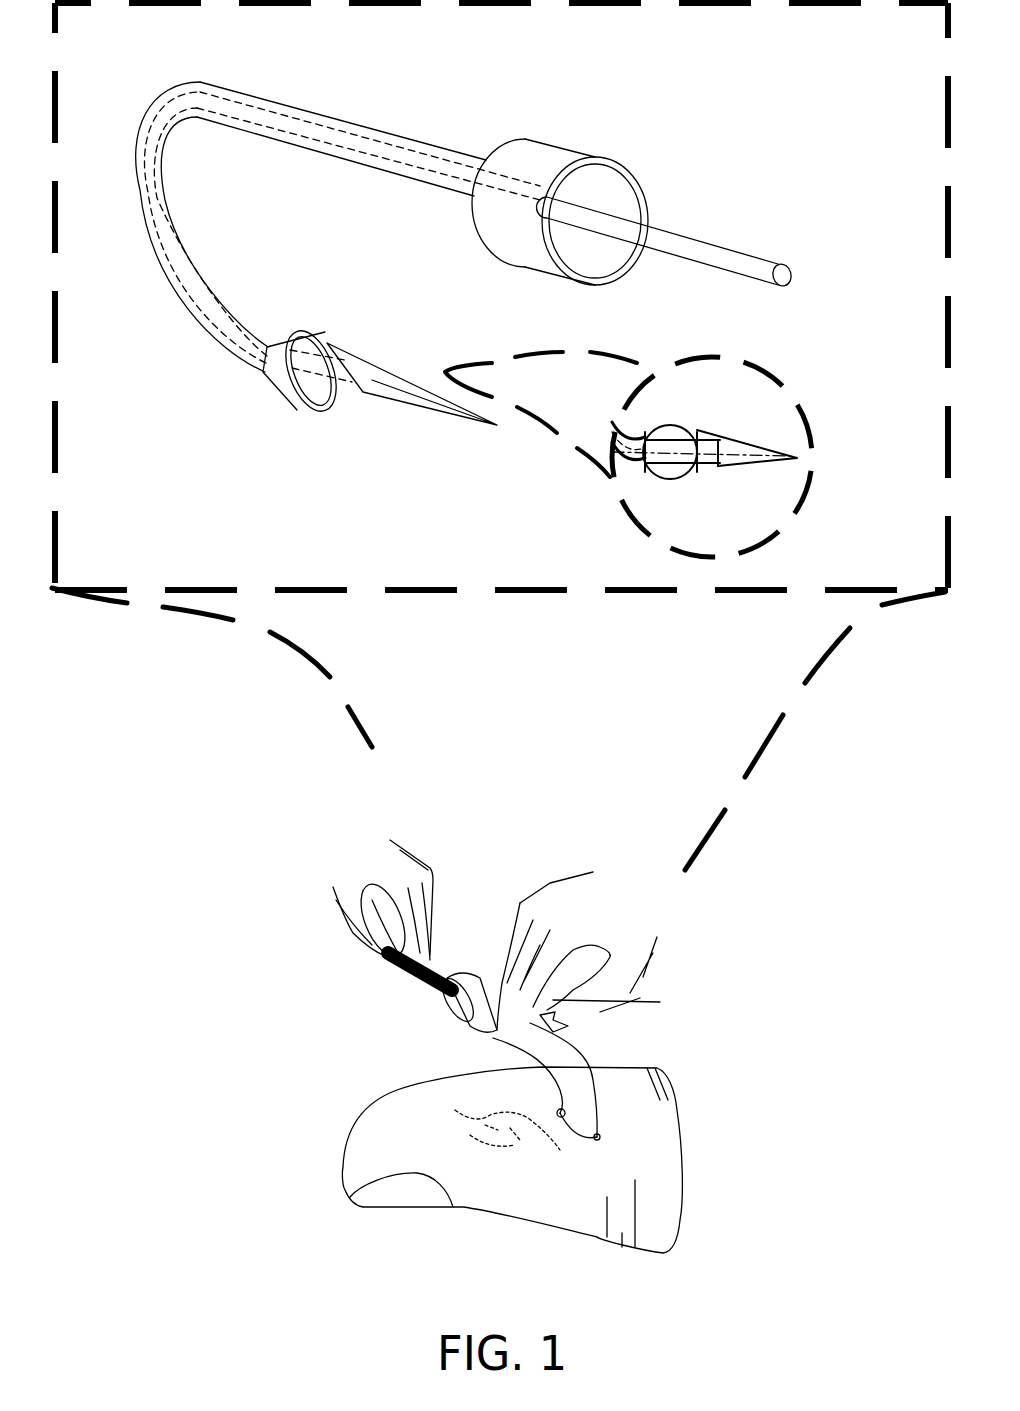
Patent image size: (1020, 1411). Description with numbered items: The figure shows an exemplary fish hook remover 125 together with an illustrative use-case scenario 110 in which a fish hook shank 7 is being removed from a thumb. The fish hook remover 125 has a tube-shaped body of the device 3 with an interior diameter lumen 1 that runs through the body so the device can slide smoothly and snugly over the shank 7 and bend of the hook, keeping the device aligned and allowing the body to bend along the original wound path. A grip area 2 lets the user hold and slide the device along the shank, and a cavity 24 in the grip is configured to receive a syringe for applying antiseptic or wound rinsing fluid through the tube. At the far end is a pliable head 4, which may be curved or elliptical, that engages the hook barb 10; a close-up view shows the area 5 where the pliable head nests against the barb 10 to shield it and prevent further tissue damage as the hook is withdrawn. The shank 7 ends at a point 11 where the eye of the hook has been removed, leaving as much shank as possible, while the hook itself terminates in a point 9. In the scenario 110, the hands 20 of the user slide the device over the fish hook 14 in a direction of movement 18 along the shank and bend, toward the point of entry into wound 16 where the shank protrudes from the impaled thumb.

The interior diameter lumen 1 is at (185, 292).
The grip area 2 is at (535, 150).
The tube-shaped body of the device 3 is at (330, 132).
The head 4 is at (280, 397).
The area where the pliable device head nests against the hook barb 5 is at (356, 365).
The fish hook shank 7 is at (718, 246).
The point of the fish hook 9 is at (425, 407).
The barb 10 is at (477, 1120).
The point where the eye of the fish hook is removed 11 is at (784, 266).
The fish hook 14 is at (570, 1068).
The point of entry into wound 16 is at (603, 1133).
The direction of movement 18 is at (557, 1008).
The hands 20 is at (368, 852).
The cavity in grip 24 is at (608, 186).
The illustrative use-case scenario 110 is at (246, 783).
The fish hook remover 125 is at (218, 57).